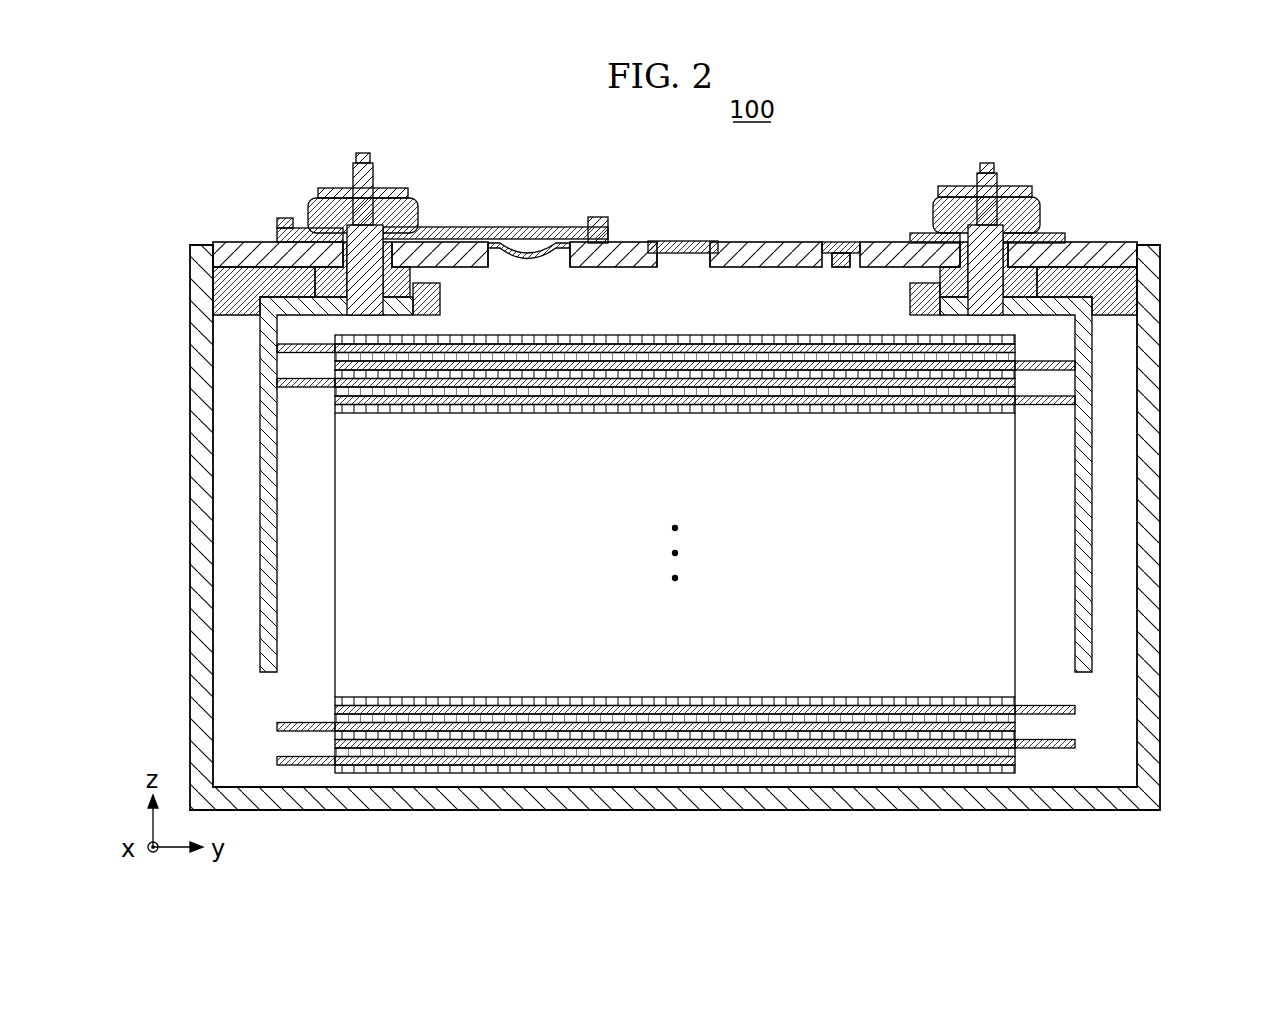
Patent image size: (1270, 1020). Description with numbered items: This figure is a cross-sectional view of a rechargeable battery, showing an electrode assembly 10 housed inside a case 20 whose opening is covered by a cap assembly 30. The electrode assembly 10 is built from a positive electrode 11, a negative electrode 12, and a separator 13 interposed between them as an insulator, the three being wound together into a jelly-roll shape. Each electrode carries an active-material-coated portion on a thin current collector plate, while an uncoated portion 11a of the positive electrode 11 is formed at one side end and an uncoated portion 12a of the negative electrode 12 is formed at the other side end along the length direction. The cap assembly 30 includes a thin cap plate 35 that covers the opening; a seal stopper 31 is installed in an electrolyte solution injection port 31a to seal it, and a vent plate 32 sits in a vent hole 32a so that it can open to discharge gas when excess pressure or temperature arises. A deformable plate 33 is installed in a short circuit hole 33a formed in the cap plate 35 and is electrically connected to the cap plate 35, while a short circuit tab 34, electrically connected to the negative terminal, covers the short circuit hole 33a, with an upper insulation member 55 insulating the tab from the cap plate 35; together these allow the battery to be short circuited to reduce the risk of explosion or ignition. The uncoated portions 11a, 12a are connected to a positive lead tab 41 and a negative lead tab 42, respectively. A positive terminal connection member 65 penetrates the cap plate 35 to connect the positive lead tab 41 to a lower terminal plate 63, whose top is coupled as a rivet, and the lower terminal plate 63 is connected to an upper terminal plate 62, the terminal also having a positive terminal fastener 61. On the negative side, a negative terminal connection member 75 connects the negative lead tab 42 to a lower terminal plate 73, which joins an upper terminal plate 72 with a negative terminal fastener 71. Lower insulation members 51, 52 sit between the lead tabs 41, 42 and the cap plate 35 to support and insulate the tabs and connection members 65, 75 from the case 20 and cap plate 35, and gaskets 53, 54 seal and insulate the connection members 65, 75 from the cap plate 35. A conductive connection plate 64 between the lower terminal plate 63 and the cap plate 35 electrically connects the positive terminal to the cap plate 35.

The electrode assembly 10 is at (676, 599).
The positive electrode 11 is at (582, 743).
The uncoated portion 11a is at (1049, 749).
The negative electrode 12 is at (456, 760).
The uncoated portion 12a is at (305, 766).
The separator 13 is at (712, 735).
The case 20 is at (190, 667).
The cap assembly 30 is at (723, 234).
The seal stopper 31 is at (836, 242).
The electrolyte solution injection port 31a is at (842, 267).
The vent plate 32 is at (695, 241).
The vent hole 32a is at (698, 266).
The deformable plate 33 is at (526, 253).
The short circuit hole 33a is at (560, 267).
The short circuit tab 34 is at (492, 227).
The cap plate 35 is at (1125, 244).
The positive lead tab 41 is at (1088, 570).
The negative lead tab 42 is at (262, 513).
The lower insulation member 51 is at (1123, 293).
The lower insulation member 52 is at (230, 294).
The gasket 53 is at (958, 246).
The gasket 54 is at (303, 249).
The upper insulation member 55 is at (595, 217).
The positive terminal fastener 61 is at (986, 165).
The upper terminal plate 62 is at (1013, 190).
The lower terminal plate 63 is at (1030, 216).
The connection plate 64 is at (1055, 238).
The positive terminal connection member 65 is at (1033, 273).
The negative terminal fastener 71 is at (365, 153).
The upper terminal plate 72 is at (323, 188).
The lower terminal plate 73 is at (318, 218).
The negative terminal connection member 75 is at (398, 273).